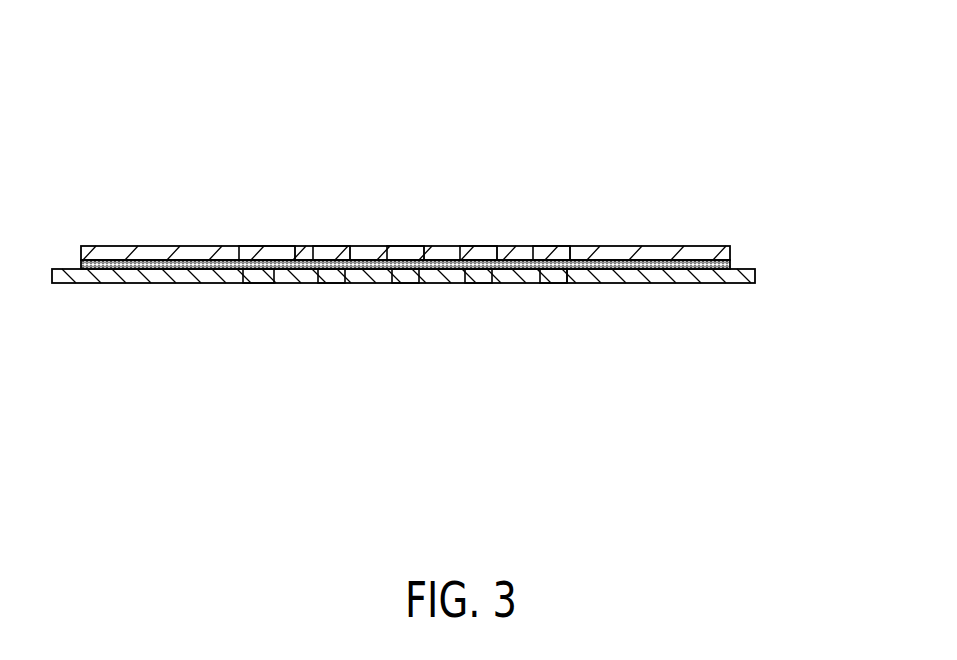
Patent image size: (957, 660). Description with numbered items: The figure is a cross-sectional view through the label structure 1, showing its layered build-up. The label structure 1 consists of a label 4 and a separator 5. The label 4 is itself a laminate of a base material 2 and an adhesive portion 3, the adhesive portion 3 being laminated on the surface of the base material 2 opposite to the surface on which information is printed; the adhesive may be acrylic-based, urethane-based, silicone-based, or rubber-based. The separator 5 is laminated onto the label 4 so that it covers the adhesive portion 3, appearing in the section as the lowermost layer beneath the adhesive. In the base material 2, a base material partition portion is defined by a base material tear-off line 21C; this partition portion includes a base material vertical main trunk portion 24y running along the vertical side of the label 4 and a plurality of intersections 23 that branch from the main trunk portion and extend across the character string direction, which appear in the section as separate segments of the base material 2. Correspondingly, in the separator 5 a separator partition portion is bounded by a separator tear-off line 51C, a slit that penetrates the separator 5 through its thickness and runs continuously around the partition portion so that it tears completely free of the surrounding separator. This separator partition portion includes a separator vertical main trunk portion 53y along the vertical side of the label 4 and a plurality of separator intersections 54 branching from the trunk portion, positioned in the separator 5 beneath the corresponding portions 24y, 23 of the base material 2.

The label structure 1 is at (458, 111).
The base material 2 is at (730, 250).
The adhesive portion 3 is at (731, 264).
The label 4 is at (830, 208).
The separator 5 is at (755, 281).
The base material tear-off line 21C is at (570, 246).
The intersections 23 is at (333, 246).
The base material vertical main trunk portion 24y is at (268, 246).
The separator tear-off line 51C is at (563, 283).
The separator vertical main trunk portion 53y is at (258, 283).
The separator intersections 54 is at (331, 283).